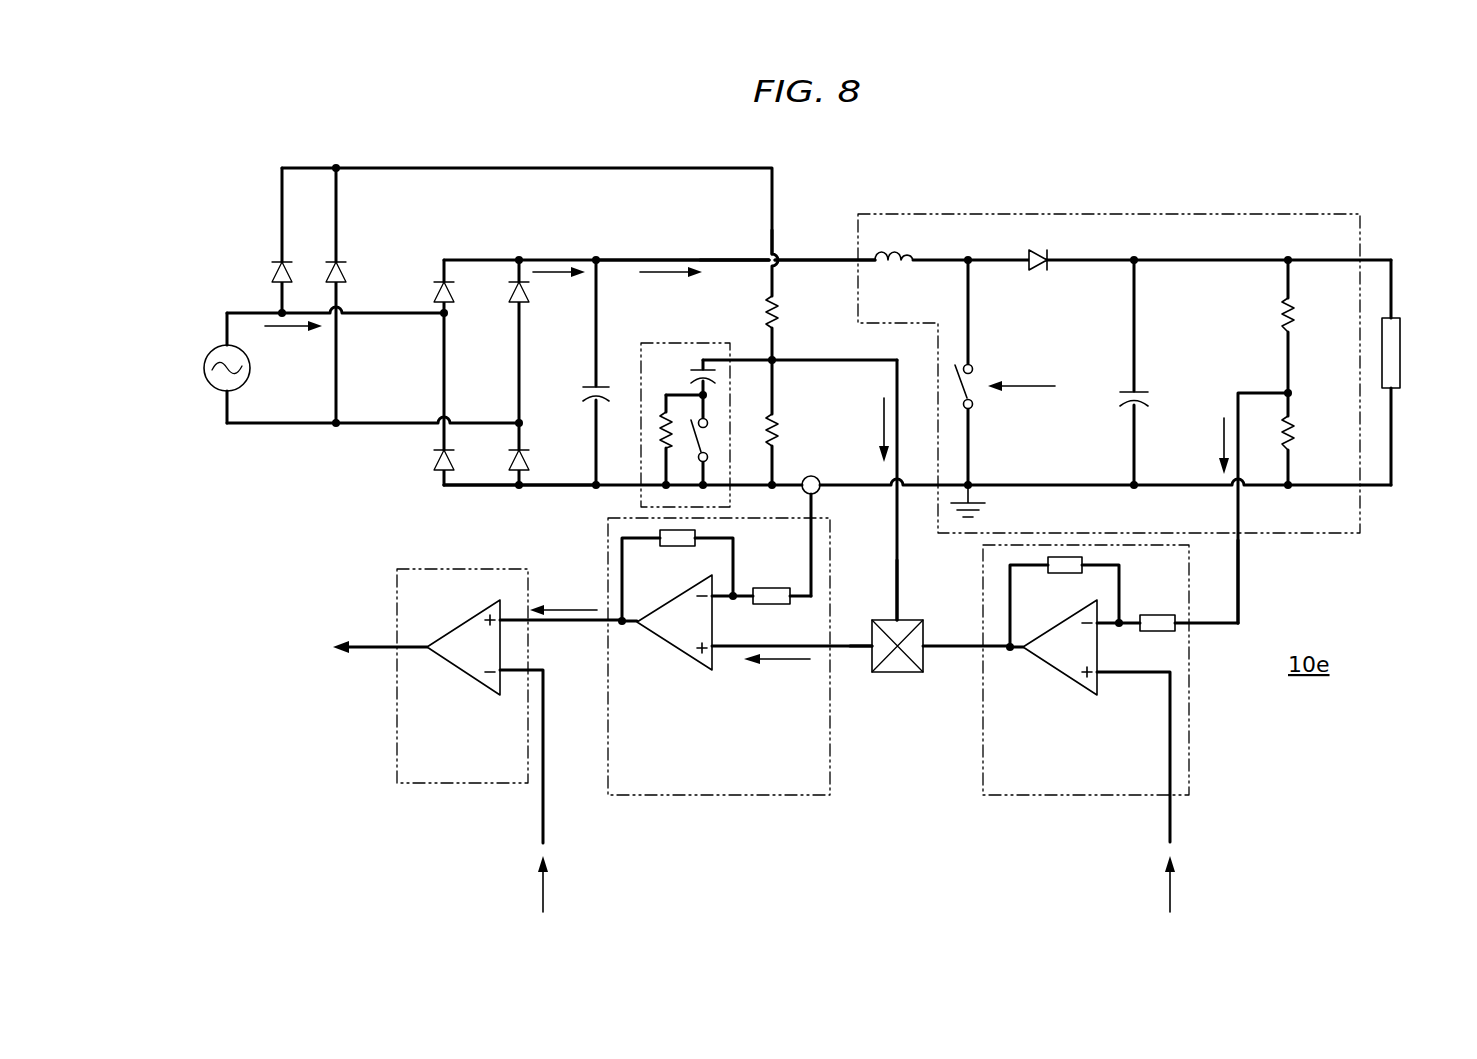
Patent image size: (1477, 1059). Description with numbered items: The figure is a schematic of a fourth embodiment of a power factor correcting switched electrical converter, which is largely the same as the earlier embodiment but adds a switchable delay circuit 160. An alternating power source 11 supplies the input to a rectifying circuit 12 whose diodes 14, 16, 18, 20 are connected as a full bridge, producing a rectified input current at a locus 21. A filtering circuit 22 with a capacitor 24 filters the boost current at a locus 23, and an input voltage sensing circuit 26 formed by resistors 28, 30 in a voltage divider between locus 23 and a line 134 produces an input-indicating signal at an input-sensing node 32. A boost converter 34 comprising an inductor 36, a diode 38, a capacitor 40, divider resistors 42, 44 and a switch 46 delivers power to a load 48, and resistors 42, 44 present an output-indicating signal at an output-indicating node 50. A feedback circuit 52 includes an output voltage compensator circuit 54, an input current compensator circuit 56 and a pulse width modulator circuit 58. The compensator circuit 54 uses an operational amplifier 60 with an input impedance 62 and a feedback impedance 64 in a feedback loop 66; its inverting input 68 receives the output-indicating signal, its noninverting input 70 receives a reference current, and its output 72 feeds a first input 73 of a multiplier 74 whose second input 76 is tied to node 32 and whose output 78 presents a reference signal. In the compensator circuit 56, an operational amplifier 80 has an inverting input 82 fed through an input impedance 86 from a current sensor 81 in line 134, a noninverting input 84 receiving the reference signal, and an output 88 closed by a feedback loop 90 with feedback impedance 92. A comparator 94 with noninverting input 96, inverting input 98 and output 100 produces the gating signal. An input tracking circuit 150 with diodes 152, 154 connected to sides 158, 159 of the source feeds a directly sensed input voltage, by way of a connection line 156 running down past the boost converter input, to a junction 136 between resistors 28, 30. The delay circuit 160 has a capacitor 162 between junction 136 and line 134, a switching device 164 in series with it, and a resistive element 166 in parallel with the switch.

The alternating power source 11 is at (212, 386).
The rectifying circuit 12 is at (477, 334).
The diode 14 is at (436, 292).
The diode 16 is at (510, 294).
The diode 18 is at (436, 460).
The diode 20 is at (528, 465).
The locus 21 is at (559, 258).
The filtering circuit 22 is at (622, 238).
The locus 23 is at (718, 258).
The capacitor 24 is at (583, 398).
The input voltage sensing circuit 26 is at (829, 230).
The resistor 28 is at (780, 310).
The resistor 30 is at (782, 440).
The input-sensing node 32 is at (895, 556).
The boost converter 34 is at (1109, 383).
The inductor 36 is at (895, 268).
The diode 38 is at (1036, 272).
The capacitor 40 is at (1146, 392).
The resistor 42 is at (1282, 316).
The resistor 44 is at (1296, 432).
The switch 46 is at (975, 374).
The load 48 is at (1401, 366).
The output-indicating node 50 is at (1242, 548).
The feedback circuit 52 is at (1128, 728).
The output voltage compensator circuit 54 is at (1064, 795).
The input current compensator circuit 56 is at (740, 689).
The pulse width modulator circuit 58 is at (444, 722).
The operational amplifier 60 is at (1058, 672).
The input impedance 62 is at (1160, 614).
The feedback impedance 64 is at (1066, 574).
The feedback loop 66 is at (1104, 562).
The inverting input 68 is at (1104, 630).
The noninverting input 70 is at (1104, 676).
The output 72 is at (1020, 650).
The first input 73 is at (926, 650).
The multiplier 74 is at (924, 653).
The second input 76 is at (894, 618).
The output 78 is at (860, 650).
The operational amplifier 80 is at (683, 660).
The current sensor 81 is at (816, 478).
The inverting input 82 is at (718, 604).
The noninverting input 84 is at (716, 652).
The input impedance 86 is at (754, 586).
The output 88 is at (632, 626).
The feedback loop 90 is at (735, 572).
The feedback impedance 92 is at (674, 548).
The comparator 94 is at (465, 676).
The noninverting input 96 is at (504, 612).
The inverting input 98 is at (536, 672).
The output 100 is at (424, 642).
The line 134 is at (556, 488).
The junction 136 is at (778, 364).
The input tracking circuit 150 is at (354, 148).
The diode 152 is at (272, 272).
The diode 154 is at (343, 272).
The connection line 156 is at (778, 256).
The side 158 is at (250, 313).
The side 159 is at (280, 425).
The switchable delay circuit 160 is at (722, 366).
The capacitor 162 is at (686, 392).
The switching device 164 is at (708, 436).
The resistive element 166 is at (660, 440).